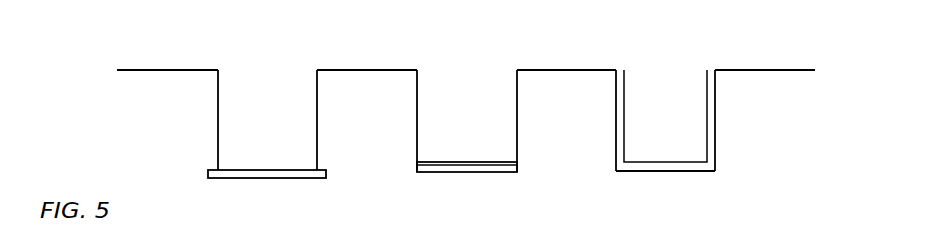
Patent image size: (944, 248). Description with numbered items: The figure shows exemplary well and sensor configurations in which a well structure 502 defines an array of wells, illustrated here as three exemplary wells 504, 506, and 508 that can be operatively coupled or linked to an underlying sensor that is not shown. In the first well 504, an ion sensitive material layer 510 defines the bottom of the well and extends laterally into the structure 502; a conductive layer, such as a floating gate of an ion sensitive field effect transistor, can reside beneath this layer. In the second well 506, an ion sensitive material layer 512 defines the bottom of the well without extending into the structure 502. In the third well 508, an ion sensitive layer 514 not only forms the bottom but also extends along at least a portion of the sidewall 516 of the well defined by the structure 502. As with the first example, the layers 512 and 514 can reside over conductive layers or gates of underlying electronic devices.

The well structure 502 is at (128, 95).
The well 504 is at (267, 68).
The well 506 is at (465, 68).
The well 508 is at (657, 68).
The ion sensitive material layer 510 is at (267, 178).
The ion sensitive material layer 512 is at (453, 172).
The ion sensitive layer 514 is at (652, 171).
The sidewall 516 is at (616, 120).